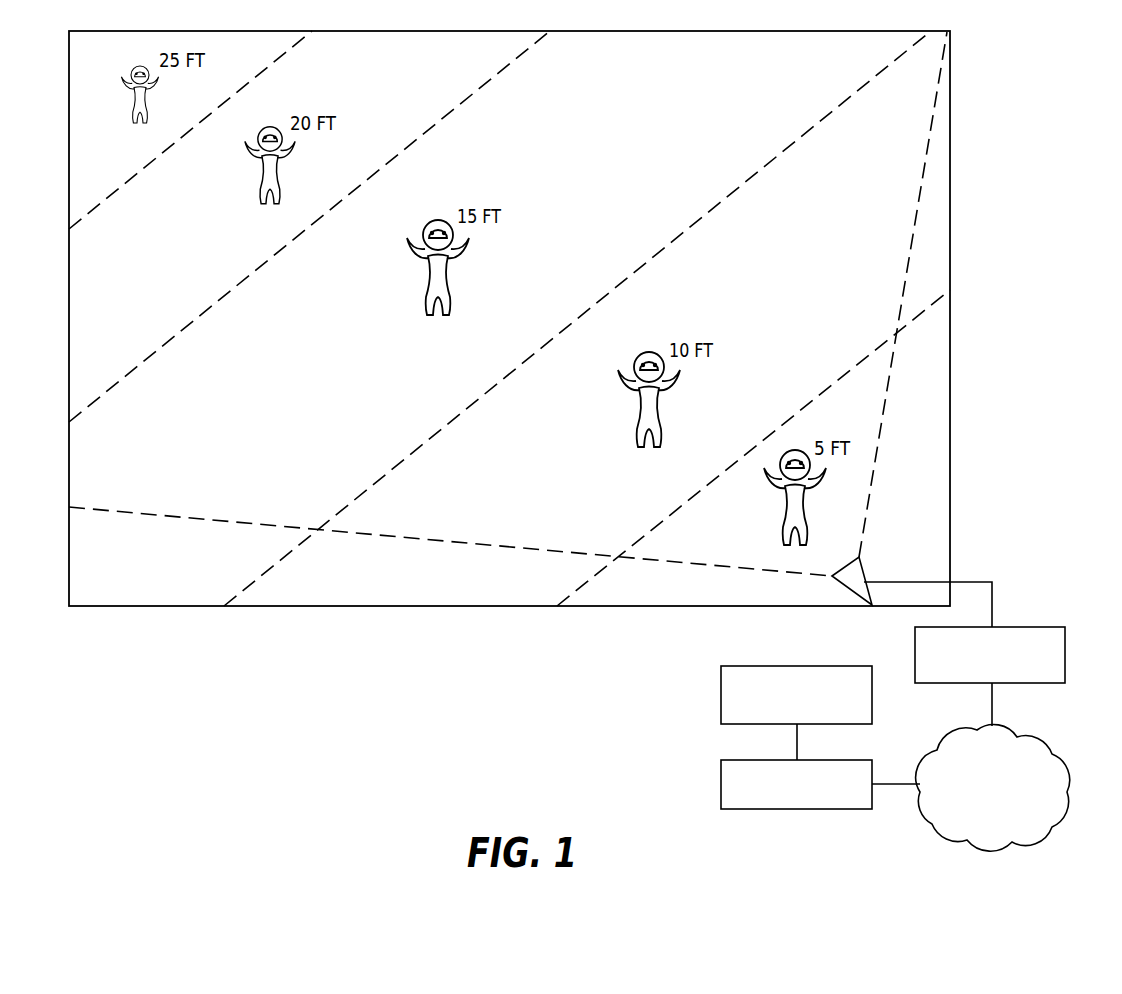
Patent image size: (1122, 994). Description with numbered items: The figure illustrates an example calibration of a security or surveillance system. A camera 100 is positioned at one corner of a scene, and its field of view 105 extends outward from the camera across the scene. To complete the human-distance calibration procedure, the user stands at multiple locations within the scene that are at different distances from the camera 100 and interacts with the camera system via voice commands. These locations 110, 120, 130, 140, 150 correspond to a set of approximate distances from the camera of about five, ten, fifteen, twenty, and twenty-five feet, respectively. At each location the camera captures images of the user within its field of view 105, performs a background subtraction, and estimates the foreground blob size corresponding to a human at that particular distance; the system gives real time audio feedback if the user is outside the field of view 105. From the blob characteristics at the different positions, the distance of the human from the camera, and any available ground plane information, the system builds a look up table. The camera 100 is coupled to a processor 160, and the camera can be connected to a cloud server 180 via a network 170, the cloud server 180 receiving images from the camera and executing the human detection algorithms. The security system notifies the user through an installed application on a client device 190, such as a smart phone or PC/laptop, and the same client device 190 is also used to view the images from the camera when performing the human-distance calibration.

The camera 100 is at (853, 588).
The field of view 105 is at (879, 443).
The user location 110 is at (782, 510).
The user location 120 is at (636, 409).
The user location 130 is at (426, 279).
The user location 140 is at (259, 175).
The user location 150 is at (128, 99).
The processor 160 is at (1013, 625).
The network 170 is at (1043, 745).
The cloud server 180 is at (773, 758).
The client device 190 is at (793, 664).